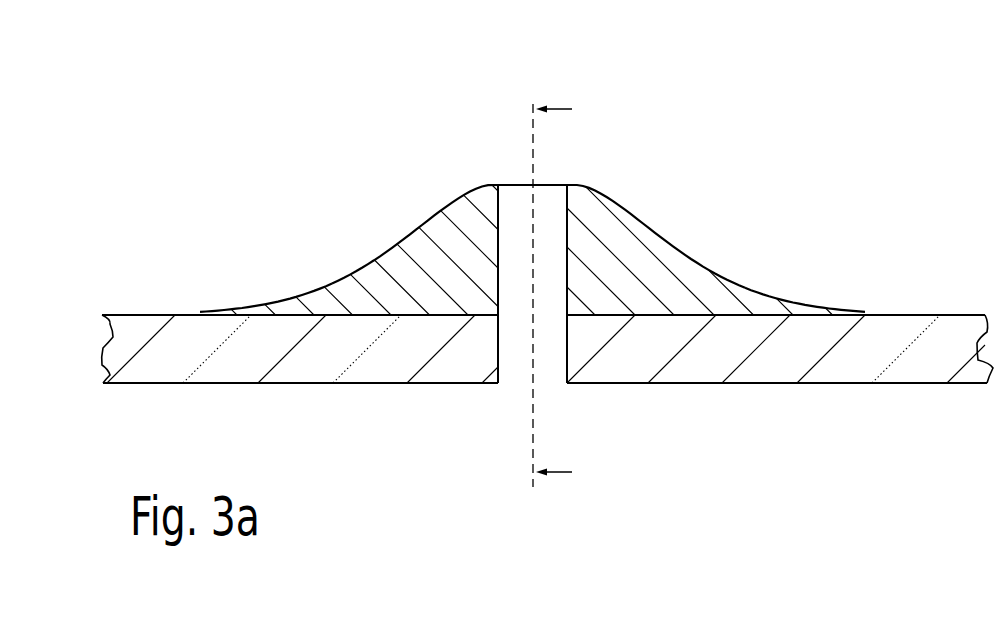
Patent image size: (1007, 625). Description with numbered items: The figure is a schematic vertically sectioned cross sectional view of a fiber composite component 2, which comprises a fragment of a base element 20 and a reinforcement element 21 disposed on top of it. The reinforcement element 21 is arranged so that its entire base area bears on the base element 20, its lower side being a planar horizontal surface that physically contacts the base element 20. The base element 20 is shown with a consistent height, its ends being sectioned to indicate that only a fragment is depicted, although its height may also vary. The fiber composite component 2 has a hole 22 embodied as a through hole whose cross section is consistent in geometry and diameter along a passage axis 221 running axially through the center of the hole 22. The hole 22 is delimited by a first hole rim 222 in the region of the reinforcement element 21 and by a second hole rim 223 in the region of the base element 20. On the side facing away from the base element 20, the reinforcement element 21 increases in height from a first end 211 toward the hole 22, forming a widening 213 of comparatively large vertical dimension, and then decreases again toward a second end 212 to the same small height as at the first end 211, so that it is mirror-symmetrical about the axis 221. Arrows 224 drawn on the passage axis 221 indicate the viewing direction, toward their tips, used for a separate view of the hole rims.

The fiber composite component 2 is at (134, 103).
The base element 20 is at (678, 412).
The reinforcement element 21 is at (680, 221).
The first end 211 is at (288, 306).
The second end 212 is at (763, 302).
The widening 213 is at (615, 222).
The hole 22 is at (560, 171).
The passage axis 221 is at (530, 432).
The first hole rim 222 is at (563, 235).
The second hole rim 223 is at (503, 340).
The arrows 224 is at (561, 108).